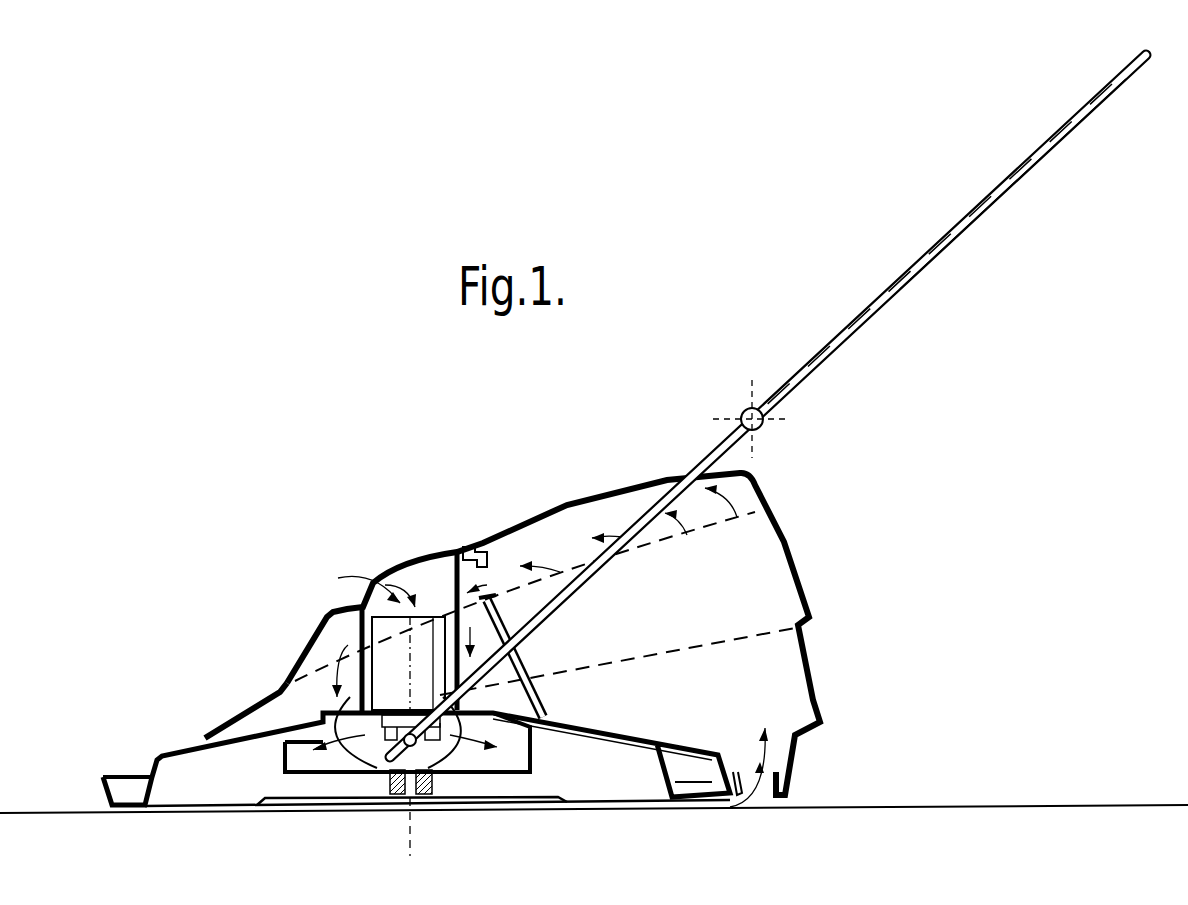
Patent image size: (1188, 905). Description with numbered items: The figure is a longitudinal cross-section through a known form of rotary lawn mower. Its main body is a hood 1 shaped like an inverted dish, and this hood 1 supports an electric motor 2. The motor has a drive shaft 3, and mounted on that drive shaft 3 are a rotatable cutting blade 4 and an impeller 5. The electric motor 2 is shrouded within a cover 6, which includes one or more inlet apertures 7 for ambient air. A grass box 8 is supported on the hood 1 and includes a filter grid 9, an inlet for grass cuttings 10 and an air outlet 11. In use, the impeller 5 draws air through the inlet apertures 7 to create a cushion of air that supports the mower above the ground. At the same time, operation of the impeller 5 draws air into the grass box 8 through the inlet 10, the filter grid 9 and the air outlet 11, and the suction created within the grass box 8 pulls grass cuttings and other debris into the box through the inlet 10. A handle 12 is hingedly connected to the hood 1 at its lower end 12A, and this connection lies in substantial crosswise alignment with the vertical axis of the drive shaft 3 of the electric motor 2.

The hood 1 is at (176, 752).
The electric motor 2 is at (387, 645).
The drive shaft 3 is at (394, 800).
The rotatable cutting blade 4 is at (440, 800).
The impeller 5 is at (533, 747).
The cover 6 is at (445, 550).
The inlet apertures 7 is at (363, 603).
The grass box 8 is at (759, 611).
The filter grid 9 is at (706, 524).
The inlet for grass cuttings 10 is at (757, 790).
The air outlet 11 is at (490, 570).
The handle 12 is at (907, 283).
The lower end of handle 12A is at (383, 757).